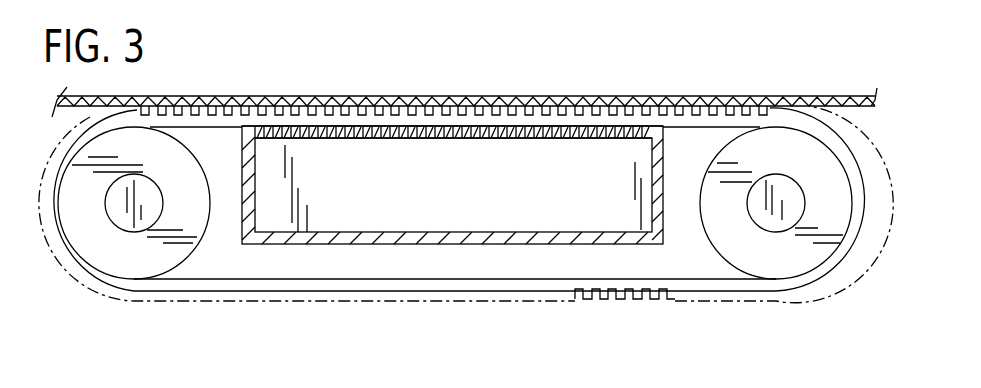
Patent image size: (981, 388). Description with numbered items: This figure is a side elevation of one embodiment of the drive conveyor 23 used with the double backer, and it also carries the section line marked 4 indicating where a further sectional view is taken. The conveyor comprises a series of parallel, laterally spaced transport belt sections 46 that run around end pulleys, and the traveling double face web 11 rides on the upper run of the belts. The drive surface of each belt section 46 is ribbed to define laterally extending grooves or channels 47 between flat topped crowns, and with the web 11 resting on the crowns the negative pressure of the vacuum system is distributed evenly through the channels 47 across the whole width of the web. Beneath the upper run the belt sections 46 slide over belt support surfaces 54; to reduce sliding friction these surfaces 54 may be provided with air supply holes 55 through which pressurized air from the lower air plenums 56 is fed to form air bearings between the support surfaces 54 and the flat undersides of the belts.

The double face web 11 is at (662, 95).
The transport belt sections 46 is at (328, 115).
The grooves or channels 47 is at (505, 105).
The belt support surfaces 54 is at (397, 130).
The air supply holes 55 is at (423, 138).
The lower air plenums 56 is at (470, 223).
The drive conveyor 23 is at (204, 314).
The section line 4- 4 is at (573, 165).